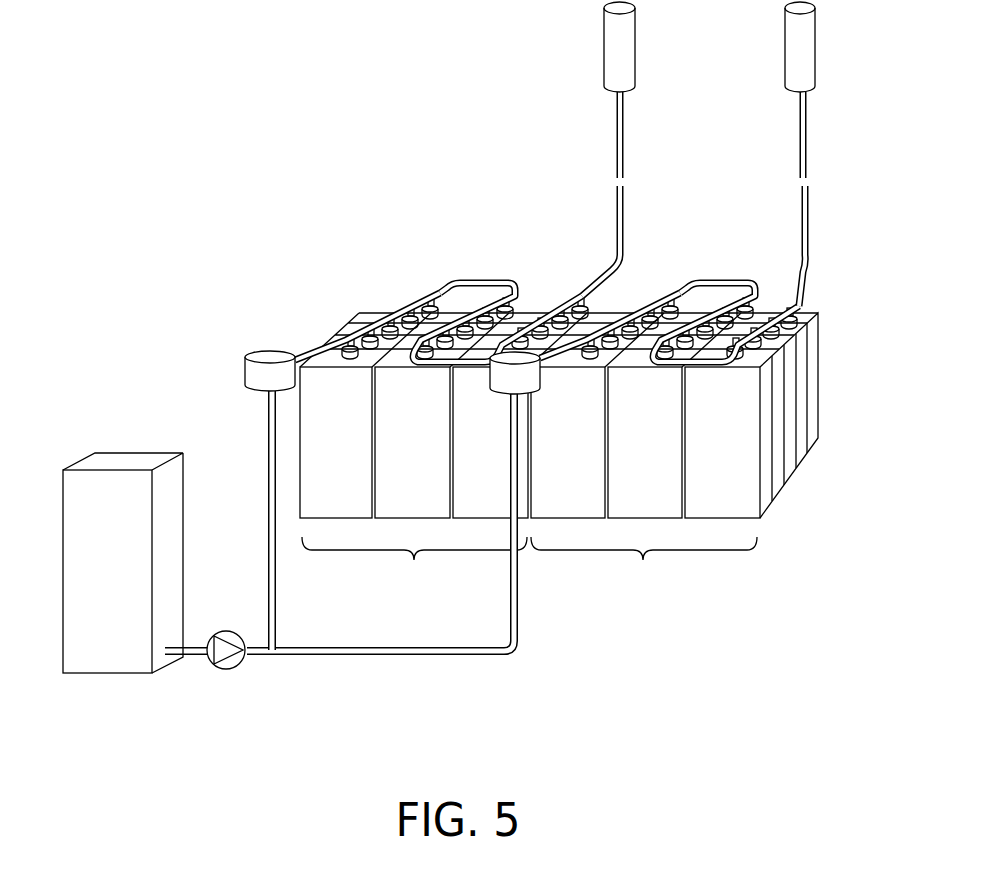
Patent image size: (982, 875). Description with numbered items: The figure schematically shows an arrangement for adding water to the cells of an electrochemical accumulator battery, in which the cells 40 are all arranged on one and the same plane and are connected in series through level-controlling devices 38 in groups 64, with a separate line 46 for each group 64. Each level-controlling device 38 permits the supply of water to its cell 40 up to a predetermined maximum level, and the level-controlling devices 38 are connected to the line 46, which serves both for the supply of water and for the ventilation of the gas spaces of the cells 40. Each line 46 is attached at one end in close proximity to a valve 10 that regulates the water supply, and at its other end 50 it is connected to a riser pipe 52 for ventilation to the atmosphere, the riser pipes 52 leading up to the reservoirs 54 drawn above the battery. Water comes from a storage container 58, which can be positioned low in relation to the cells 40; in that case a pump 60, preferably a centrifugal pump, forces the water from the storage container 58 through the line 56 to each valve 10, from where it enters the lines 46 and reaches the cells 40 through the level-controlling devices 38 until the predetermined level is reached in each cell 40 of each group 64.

The valve 10 is at (238, 361).
The level-controlling device 38 is at (368, 317).
The cell 40 is at (317, 377).
The line 46 is at (490, 282).
The other end of the line 50 is at (590, 293).
The riser pipe 52 is at (625, 200).
The reservoir 54 is at (622, 38).
The line 56 is at (267, 668).
The storage container 58 is at (115, 685).
The pump 60 is at (226, 682).
The group 64 is at (559, 460).